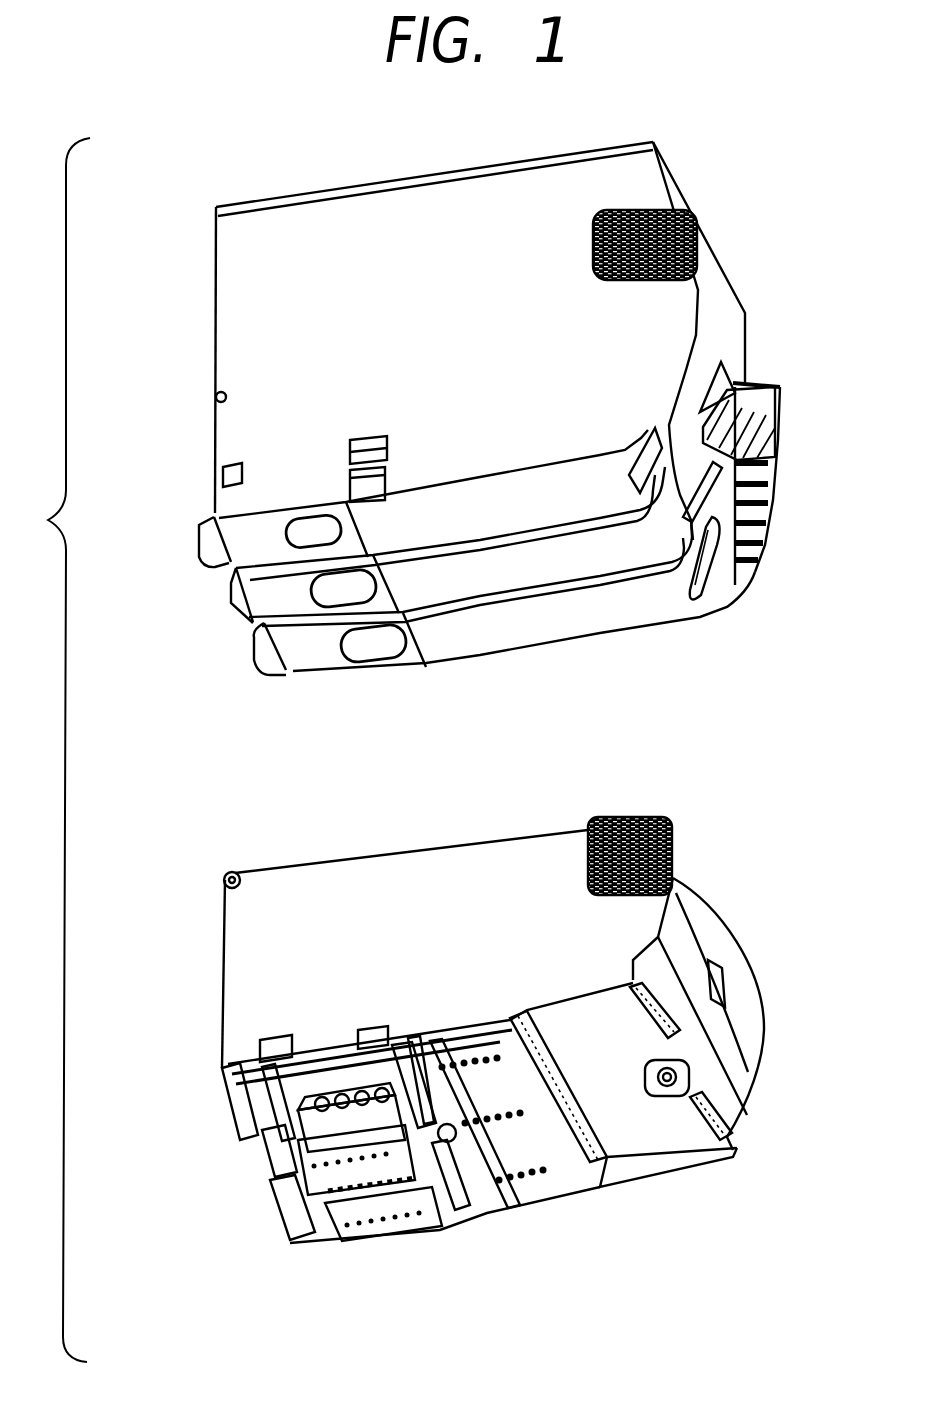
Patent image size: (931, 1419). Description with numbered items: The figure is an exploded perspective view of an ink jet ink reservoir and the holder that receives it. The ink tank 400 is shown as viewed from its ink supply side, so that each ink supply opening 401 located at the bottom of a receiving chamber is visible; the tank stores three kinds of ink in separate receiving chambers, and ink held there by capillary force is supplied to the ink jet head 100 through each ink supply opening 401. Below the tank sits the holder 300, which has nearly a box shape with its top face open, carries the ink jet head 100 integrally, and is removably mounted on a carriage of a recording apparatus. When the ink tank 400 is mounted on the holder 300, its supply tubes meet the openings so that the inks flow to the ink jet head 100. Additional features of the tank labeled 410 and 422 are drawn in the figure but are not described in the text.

The ink jet head 100 is at (340, 1262).
The holder 300 is at (752, 900).
The ink tank 400 is at (726, 236).
The ink supply opening 401 is at (373, 648).
The groove 410 is at (403, 618).
The tab 422 is at (362, 435).